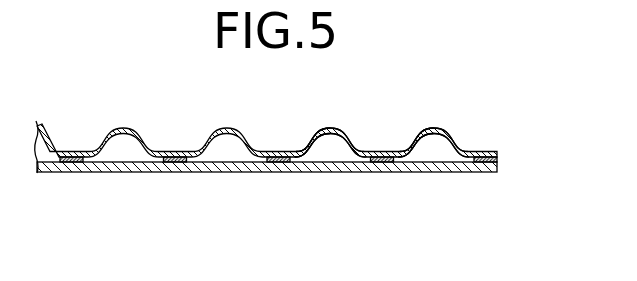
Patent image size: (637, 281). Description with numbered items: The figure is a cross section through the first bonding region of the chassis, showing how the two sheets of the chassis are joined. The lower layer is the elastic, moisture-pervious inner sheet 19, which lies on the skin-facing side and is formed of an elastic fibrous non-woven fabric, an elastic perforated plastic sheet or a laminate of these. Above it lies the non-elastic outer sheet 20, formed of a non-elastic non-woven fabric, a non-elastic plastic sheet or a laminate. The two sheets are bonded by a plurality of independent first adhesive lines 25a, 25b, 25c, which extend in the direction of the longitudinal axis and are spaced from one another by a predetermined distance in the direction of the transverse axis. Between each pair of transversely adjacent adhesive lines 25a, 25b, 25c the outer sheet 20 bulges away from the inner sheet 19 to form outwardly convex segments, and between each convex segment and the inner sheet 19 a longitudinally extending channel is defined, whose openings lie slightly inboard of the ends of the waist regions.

The inner sheet 19 is at (124, 172).
The outer sheet 20 is at (266, 118).
The first adhesive line 25a is at (484, 172).
The first adhesive line 25b is at (382, 172).
The first adhesive line 25c is at (278, 172).